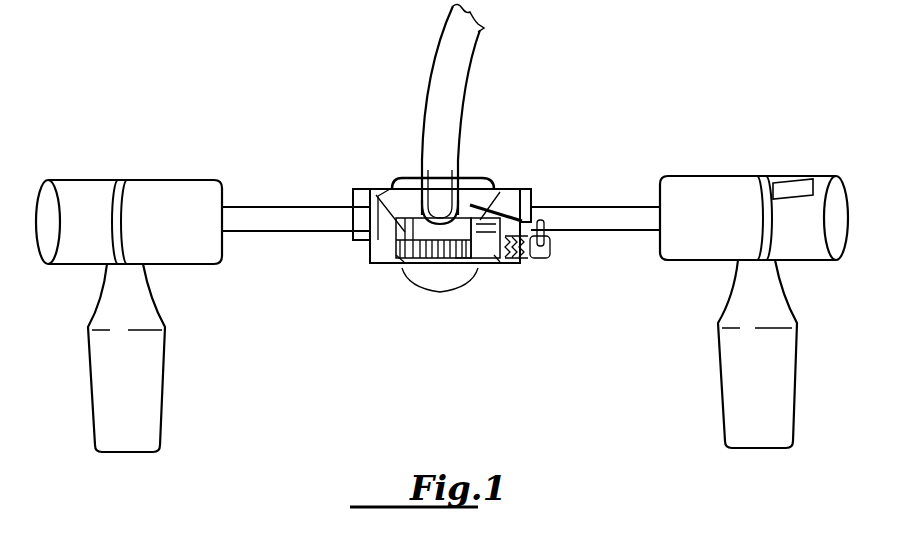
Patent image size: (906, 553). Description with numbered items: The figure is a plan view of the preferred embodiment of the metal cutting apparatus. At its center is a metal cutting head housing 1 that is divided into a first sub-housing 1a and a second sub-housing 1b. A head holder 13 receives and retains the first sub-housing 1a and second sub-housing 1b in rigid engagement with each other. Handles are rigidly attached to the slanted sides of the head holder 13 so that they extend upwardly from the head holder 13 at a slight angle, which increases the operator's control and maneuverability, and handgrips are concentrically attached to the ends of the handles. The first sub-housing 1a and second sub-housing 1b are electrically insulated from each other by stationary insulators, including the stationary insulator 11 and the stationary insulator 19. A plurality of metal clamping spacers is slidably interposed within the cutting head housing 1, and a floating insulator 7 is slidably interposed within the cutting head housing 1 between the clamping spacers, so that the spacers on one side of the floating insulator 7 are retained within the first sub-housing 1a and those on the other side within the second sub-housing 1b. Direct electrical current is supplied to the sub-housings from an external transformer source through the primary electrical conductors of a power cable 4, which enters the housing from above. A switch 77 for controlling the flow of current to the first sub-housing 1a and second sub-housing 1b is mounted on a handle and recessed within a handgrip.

The metal cutting head housing 1 is at (440, 292).
The first sub-housing 1a is at (390, 218).
The second sub-housing 1b is at (496, 208).
The power cable 4 is at (437, 72).
The floating insulator 7 is at (429, 272).
The stationary insulator 11 is at (468, 272).
The head holder 13 is at (490, 200).
The stationary insulator 19 is at (440, 228).
The switch 77 is at (796, 188).